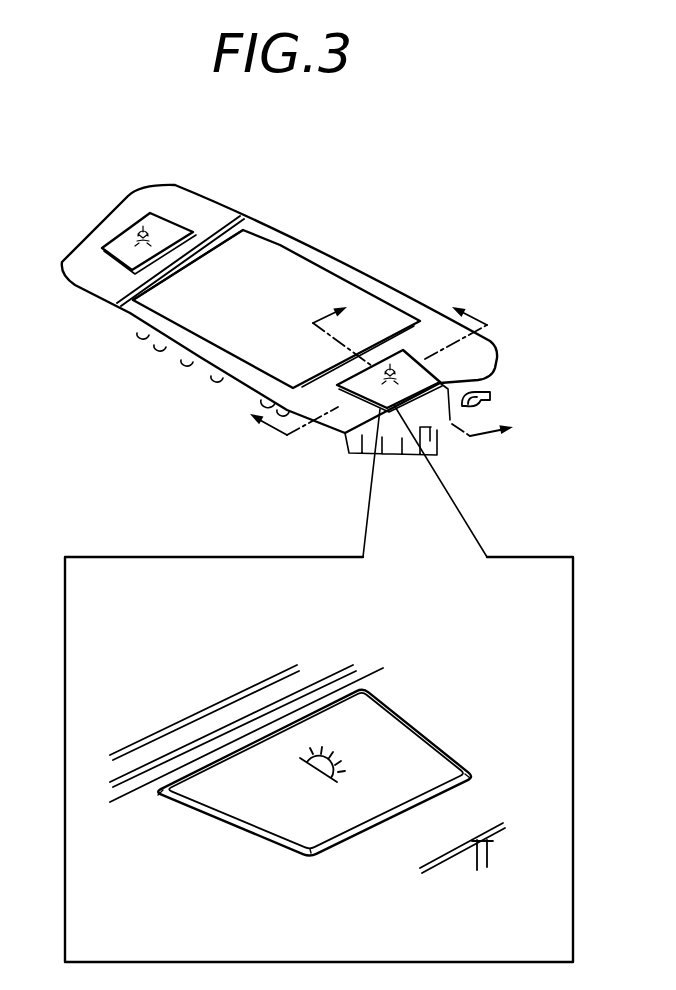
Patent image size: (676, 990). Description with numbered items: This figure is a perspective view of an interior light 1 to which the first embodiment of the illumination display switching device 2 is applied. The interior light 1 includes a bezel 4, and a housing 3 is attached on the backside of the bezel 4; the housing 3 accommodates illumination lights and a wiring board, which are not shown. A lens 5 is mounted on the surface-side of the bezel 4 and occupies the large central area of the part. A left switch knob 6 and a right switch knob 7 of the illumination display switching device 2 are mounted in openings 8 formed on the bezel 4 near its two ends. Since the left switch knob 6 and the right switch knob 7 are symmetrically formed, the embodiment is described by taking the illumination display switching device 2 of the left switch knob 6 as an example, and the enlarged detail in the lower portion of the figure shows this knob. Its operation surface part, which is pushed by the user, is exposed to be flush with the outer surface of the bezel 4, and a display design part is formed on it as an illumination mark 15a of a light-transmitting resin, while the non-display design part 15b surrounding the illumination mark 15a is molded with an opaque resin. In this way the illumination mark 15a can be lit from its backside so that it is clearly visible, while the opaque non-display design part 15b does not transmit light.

The interior light 1 is at (331, 209).
The illumination display switching device 2 is at (147, 208).
The housing 3 is at (472, 408).
The bezel 4 is at (463, 357).
The lens 5 is at (323, 285).
The left switch knob 6 is at (392, 392).
The right switch knob 7 is at (160, 227).
The openings 8 is at (113, 262).
The illumination mark 15a is at (308, 757).
The non-display design part 15b is at (400, 733).